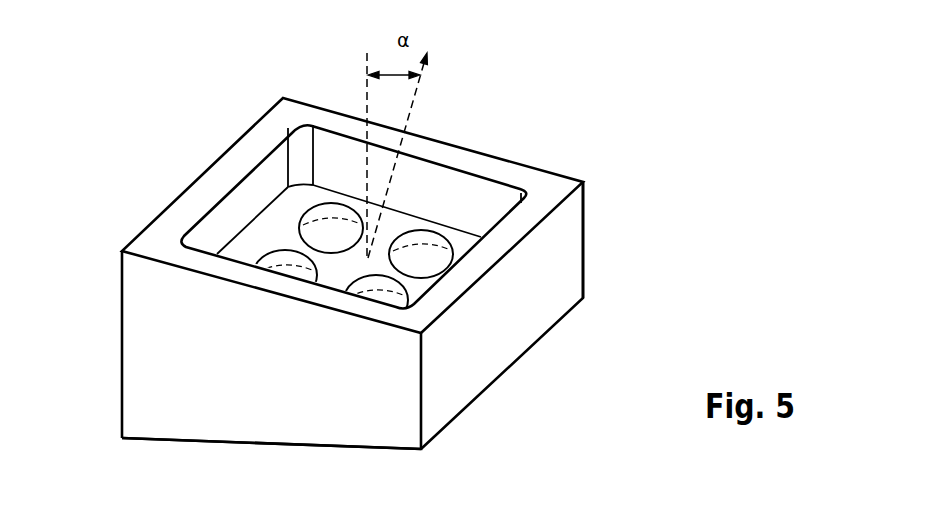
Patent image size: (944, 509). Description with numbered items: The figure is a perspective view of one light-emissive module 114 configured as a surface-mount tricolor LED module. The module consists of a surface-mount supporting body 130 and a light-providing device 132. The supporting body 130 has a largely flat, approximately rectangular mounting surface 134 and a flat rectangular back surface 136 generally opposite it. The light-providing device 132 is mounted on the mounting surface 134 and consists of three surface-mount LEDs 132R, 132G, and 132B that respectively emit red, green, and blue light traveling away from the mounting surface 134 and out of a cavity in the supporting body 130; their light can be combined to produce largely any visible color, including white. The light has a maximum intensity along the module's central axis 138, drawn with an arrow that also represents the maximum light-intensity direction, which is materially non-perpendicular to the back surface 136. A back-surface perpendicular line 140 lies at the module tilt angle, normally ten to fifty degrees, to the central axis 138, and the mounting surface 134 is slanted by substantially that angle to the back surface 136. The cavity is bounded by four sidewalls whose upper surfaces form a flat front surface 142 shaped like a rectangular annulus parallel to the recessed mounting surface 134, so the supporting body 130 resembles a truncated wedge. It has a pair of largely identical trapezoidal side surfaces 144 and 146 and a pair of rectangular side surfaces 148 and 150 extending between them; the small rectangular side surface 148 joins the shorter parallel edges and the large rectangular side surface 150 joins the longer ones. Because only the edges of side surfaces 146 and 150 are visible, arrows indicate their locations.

The light-emissive module 114 is at (622, 260).
The supporting body 130 is at (351, 302).
The light-providing device 132 is at (86, 86).
The red surface-mount LED 132R is at (318, 217).
The green surface-mount LED 132G is at (290, 260).
The blue surface-mount LED 132B is at (392, 265).
The mounting surface 134 is at (458, 230).
The back surface 136 is at (165, 455).
The central axis 138 is at (411, 113).
The back-surface perpendicular line 140 is at (365, 90).
The front surface 142 is at (153, 232).
The trapezoidal side surface 144 is at (351, 427).
The trapezoidal side surface 146 is at (597, 207).
The small rectangular side surface 148 is at (511, 339).
The large rectangular side surface 150 is at (115, 238).